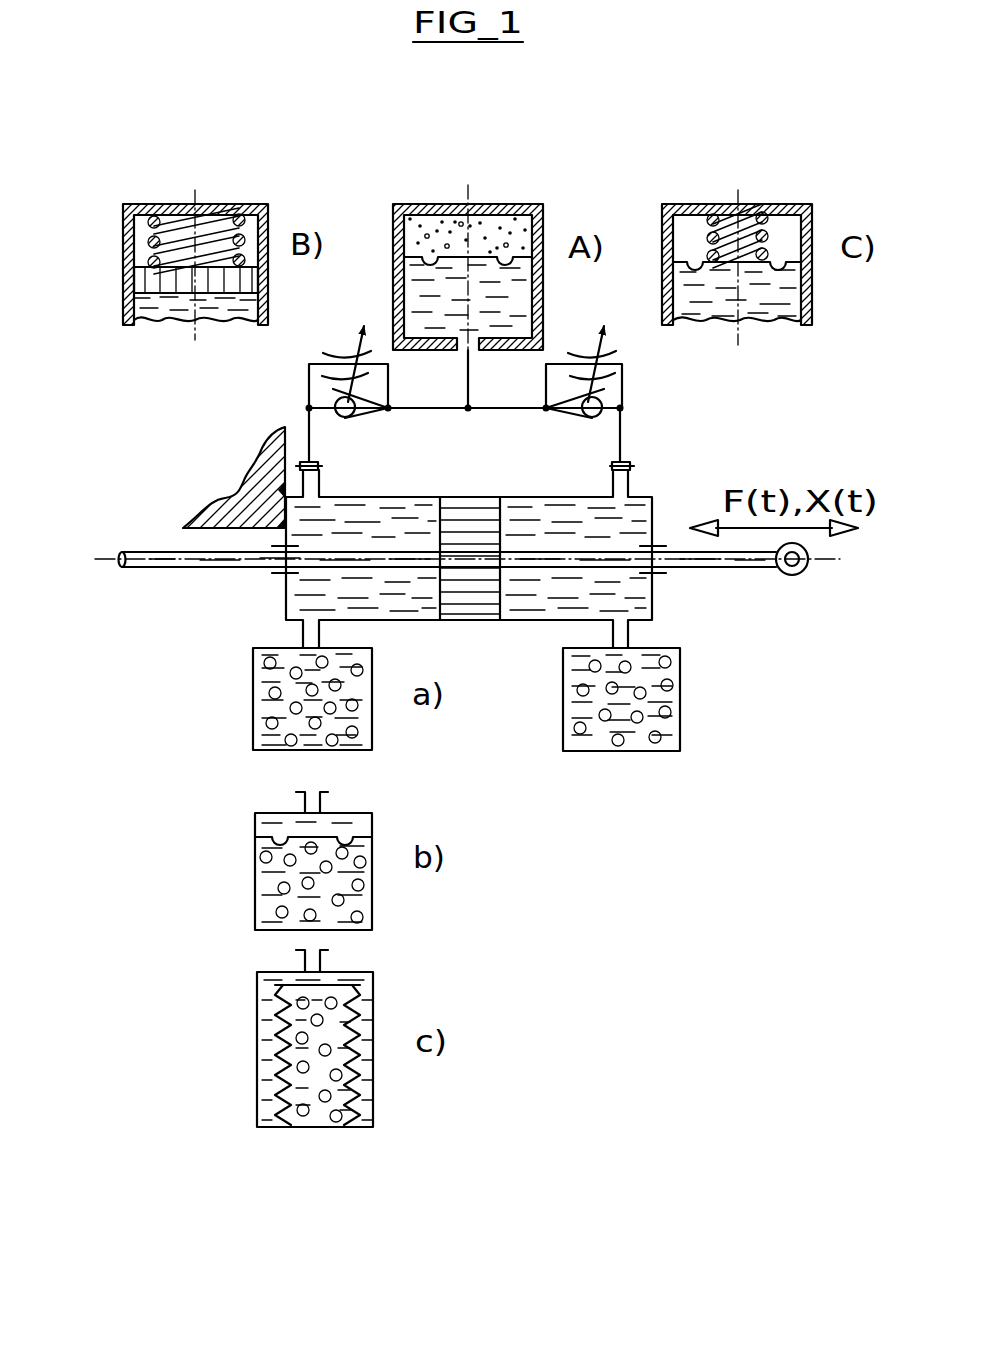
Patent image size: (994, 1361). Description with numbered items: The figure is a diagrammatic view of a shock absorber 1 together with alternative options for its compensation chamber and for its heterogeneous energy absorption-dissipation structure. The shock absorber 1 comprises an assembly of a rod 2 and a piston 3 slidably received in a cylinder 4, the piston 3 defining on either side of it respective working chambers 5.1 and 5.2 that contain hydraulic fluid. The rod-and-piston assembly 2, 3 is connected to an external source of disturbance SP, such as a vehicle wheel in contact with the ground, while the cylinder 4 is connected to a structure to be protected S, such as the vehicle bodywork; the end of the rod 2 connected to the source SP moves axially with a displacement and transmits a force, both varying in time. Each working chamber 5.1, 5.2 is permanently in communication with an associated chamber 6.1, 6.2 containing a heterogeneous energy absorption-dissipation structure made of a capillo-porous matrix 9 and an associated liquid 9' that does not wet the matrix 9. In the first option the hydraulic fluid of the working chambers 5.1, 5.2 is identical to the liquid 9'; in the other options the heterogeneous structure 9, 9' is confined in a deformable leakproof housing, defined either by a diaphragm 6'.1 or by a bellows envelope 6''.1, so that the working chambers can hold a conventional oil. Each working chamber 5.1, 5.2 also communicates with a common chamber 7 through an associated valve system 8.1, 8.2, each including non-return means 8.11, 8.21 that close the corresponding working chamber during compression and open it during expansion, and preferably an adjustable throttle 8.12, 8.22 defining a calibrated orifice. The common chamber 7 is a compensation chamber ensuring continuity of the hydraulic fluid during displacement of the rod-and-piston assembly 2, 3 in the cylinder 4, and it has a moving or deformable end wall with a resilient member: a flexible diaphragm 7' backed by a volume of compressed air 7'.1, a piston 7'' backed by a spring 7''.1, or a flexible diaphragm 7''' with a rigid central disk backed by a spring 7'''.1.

The shock absorber 1 is at (212, 632).
The rod 2 is at (145, 557).
The piston 3 is at (478, 530).
The cylinder 4 is at (542, 622).
The working chamber 5.1 is at (392, 518).
The working chamber 5.2 is at (563, 527).
The associated chamber 6.1 is at (253, 700).
The associated chamber 6.2 is at (682, 718).
The diaphragm 6'.1 is at (261, 826).
The bellows envelope 6''.1 is at (263, 1083).
The common chamber 7 is at (467, 226).
The flexible diaphragm 7' is at (467, 189).
The volume of compressed air 7'.1 is at (508, 235).
The piston 7'' is at (156, 284).
The spring 7''.1 is at (161, 205).
The flexible diaphragm 7''' is at (753, 317).
The spring 7'''.1 is at (791, 204).
The valve system 8.1 is at (302, 385).
The non-return means 8.11 is at (340, 418).
The adjustable throttle 8.12 is at (338, 352).
The valve system 8.2 is at (646, 396).
The non-return means 8.21 is at (586, 418).
The adjustable throttle 8.22 is at (590, 352).
The capillo-porous matrix 9 is at (466, 889).
The associated liquid 9' is at (434, 900).
The structure to be protected S is at (235, 500).
The external source of disturbance SP is at (797, 574).